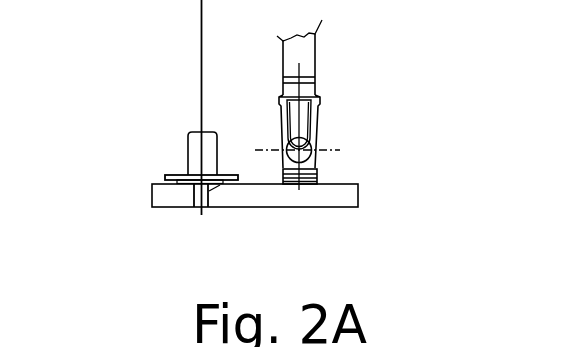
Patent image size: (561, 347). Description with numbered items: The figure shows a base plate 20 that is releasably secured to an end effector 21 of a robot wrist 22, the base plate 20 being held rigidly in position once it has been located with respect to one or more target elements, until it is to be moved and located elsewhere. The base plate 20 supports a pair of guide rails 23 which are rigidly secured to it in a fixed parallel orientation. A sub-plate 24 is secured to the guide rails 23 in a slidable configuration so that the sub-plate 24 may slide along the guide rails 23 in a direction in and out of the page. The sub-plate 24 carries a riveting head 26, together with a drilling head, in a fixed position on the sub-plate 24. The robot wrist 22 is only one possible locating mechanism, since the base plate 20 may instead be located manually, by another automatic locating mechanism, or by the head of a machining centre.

The base plate 20 is at (335, 198).
The end effector 21 is at (320, 181).
The robot wrist 22 is at (307, 123).
The guide rails 23 is at (203, 215).
The sub-plate 24 is at (167, 177).
The riveting head 26 is at (193, 148).